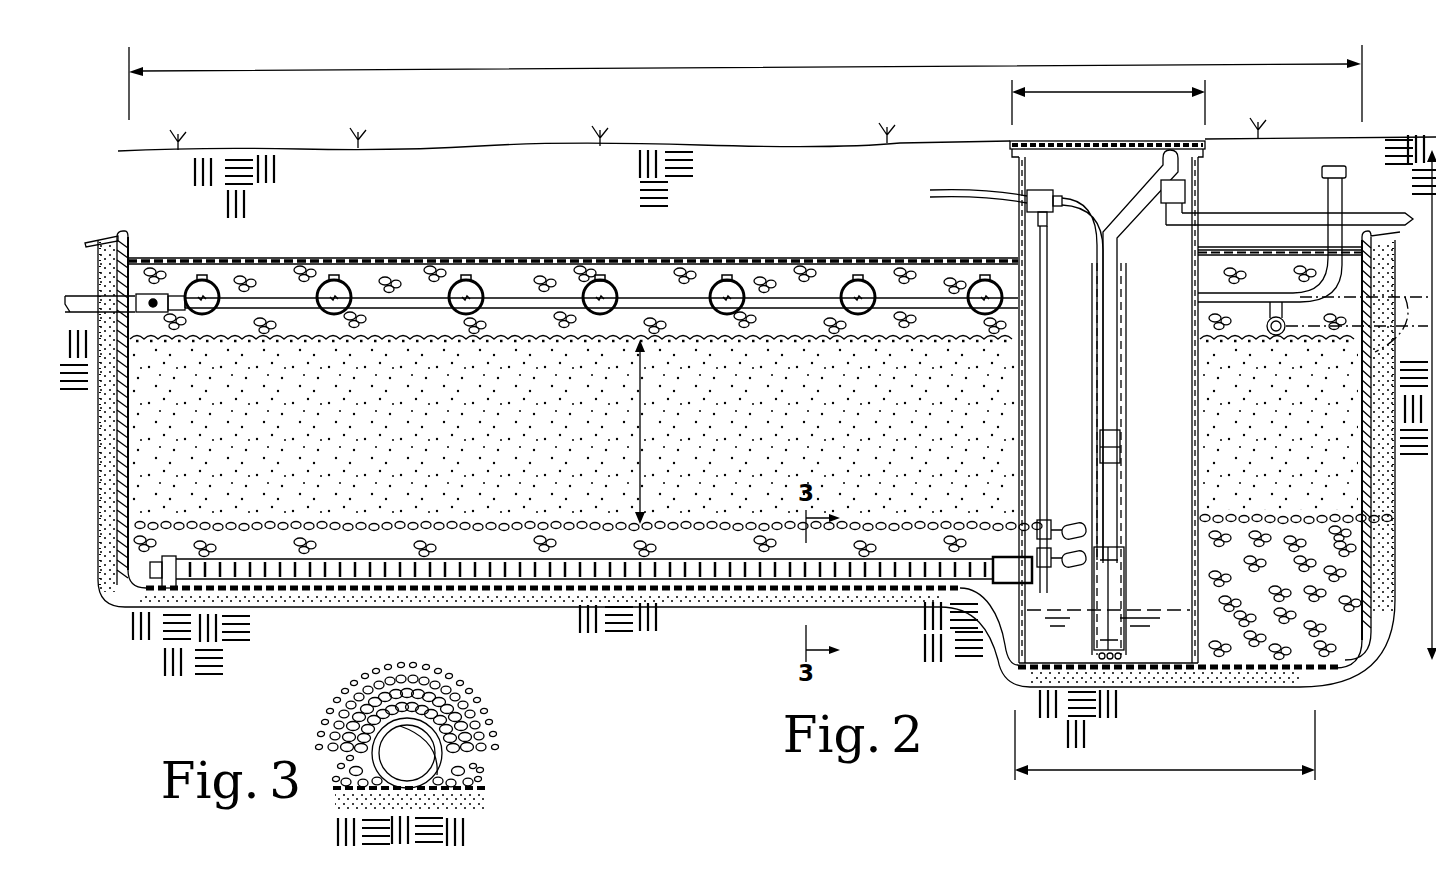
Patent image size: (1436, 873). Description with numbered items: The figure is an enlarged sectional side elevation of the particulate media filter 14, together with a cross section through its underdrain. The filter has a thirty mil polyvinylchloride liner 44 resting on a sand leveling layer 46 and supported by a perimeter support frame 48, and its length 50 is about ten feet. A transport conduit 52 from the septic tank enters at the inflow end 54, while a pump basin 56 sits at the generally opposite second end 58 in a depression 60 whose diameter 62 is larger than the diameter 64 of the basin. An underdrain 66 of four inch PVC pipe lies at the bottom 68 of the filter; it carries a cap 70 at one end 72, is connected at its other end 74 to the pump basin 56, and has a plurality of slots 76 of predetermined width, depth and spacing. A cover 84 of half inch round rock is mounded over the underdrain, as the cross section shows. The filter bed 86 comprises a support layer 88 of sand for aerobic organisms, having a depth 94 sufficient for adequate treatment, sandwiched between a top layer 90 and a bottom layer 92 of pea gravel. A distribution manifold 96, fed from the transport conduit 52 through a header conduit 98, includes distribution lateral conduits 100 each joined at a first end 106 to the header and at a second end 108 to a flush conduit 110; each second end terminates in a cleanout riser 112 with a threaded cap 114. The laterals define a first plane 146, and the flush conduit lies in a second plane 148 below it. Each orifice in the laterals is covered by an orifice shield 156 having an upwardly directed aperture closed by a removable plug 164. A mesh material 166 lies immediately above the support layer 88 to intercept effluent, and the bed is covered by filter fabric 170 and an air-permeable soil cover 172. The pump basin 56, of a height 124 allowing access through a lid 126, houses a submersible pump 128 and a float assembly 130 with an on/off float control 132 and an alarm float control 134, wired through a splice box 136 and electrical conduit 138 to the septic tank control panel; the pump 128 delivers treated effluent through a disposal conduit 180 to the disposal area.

In FIG. 2, the subsurface irrigation and drainage system 14 is at (793, 128).
In FIG. 2, the liner 44 is at (106, 240).
In FIG. 3, the liner 44 is at (485, 790).
In FIG. 2, the sand leveling layer 46 is at (103, 555).
In FIG. 3, the sand leveling layer 46 is at (480, 803).
In FIG. 2, the perimeter support frame 48 is at (120, 600).
In FIG. 2, the length 50 is at (432, 72).
In FIG. 2, the transport conduit 52 is at (68, 292).
In FIG. 2, the inflow end 54 is at (135, 282).
In FIG. 2, the pump basin 56 is at (1212, 491).
In FIG. 2, the second end 58 is at (1358, 415).
In FIG. 2, the depression 60 is at (1190, 690).
In FIG. 2, the diameter of depression 62 is at (1170, 770).
In FIG. 2, the diameter of pump basin 64 is at (1113, 93).
In FIG. 2, the underdrain 66 is at (315, 578).
In FIG. 3, the underdrain 66 is at (450, 760).
In FIG. 2, the bottom 68 is at (728, 587).
In FIG. 2, the cap 70 is at (160, 562).
In FIG. 2, the one end 72 is at (178, 565).
In FIG. 2, the other end 74 is at (1000, 558).
In FIG. 2, the slots 76 is at (440, 559).
In FIG. 3, the cover 84 is at (373, 695).
In FIG. 2, the filter bed 86 is at (807, 248).
In FIG. 2, the support layer 88 is at (483, 438).
In FIG. 2, the top layer 90 is at (523, 292).
In FIG. 2, the bottom layer 92 is at (410, 522).
In FIG. 3, the bottom layer 92 is at (480, 718).
In FIG. 2, the depth 94 is at (640, 462).
In FIG. 2, the distribution manifold 96 is at (175, 286).
In FIG. 2, the header conduit 98 is at (153, 312).
In FIG. 2, the distribution lateral conduits 100 is at (360, 340).
In FIG. 2, the first end 106 is at (177, 312).
In FIG. 2, the second end 108 is at (1232, 292).
In FIG. 2, the flush conduit 110 is at (1275, 340).
In FIG. 2, the cleanout riser 112 is at (1325, 195).
In FIG. 2, the threaded cap 114 is at (1336, 164).
In FIG. 2, the height 124 is at (1432, 662).
In FIG. 2, the lid 126 is at (1095, 140).
In FIG. 2, the submersible pump 128 is at (1108, 520).
In FIG. 2, the float assembly 130 is at (1040, 425).
In FIG. 2, the on/off float control 132 is at (1100, 548).
In FIG. 2, the alarm float control 134 is at (1068, 522).
In FIG. 2, the splice box 136 is at (1035, 188).
In FIG. 2, the electrical conduit 138 is at (965, 212).
In FIG. 2, the first plane 146 is at (1405, 330).
In FIG. 2, the second plane 148 is at (1292, 345).
In FIG. 2, the orifice shield 156 is at (716, 280).
In FIG. 2, the plug 164 is at (612, 280).
In FIG. 2, the mesh material 166 is at (292, 340).
In FIG. 2, the filter fabric 170 is at (440, 260).
In FIG. 2, the soil cover 172 is at (560, 146).
In FIG. 2, the disposal conduit 180 is at (1300, 213).